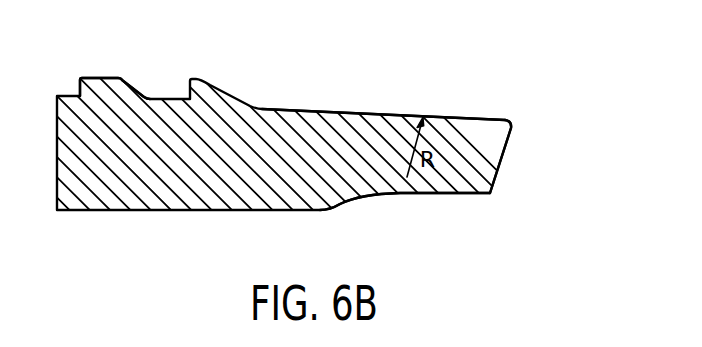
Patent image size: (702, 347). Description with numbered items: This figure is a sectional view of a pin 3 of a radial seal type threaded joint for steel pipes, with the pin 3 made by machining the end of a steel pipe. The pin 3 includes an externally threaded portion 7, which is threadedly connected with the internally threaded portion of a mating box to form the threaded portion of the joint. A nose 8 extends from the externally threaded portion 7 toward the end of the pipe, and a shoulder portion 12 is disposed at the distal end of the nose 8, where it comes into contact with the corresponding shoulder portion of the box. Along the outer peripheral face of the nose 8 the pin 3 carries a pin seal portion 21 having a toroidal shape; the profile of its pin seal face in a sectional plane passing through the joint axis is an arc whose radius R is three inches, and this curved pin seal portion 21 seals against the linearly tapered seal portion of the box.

The pin 3 is at (158, 163).
The externally threaded portion 7 is at (102, 90).
The nose 8 is at (370, 163).
The pin seal portion 21 is at (472, 118).
The shoulder portion 12 is at (502, 163).